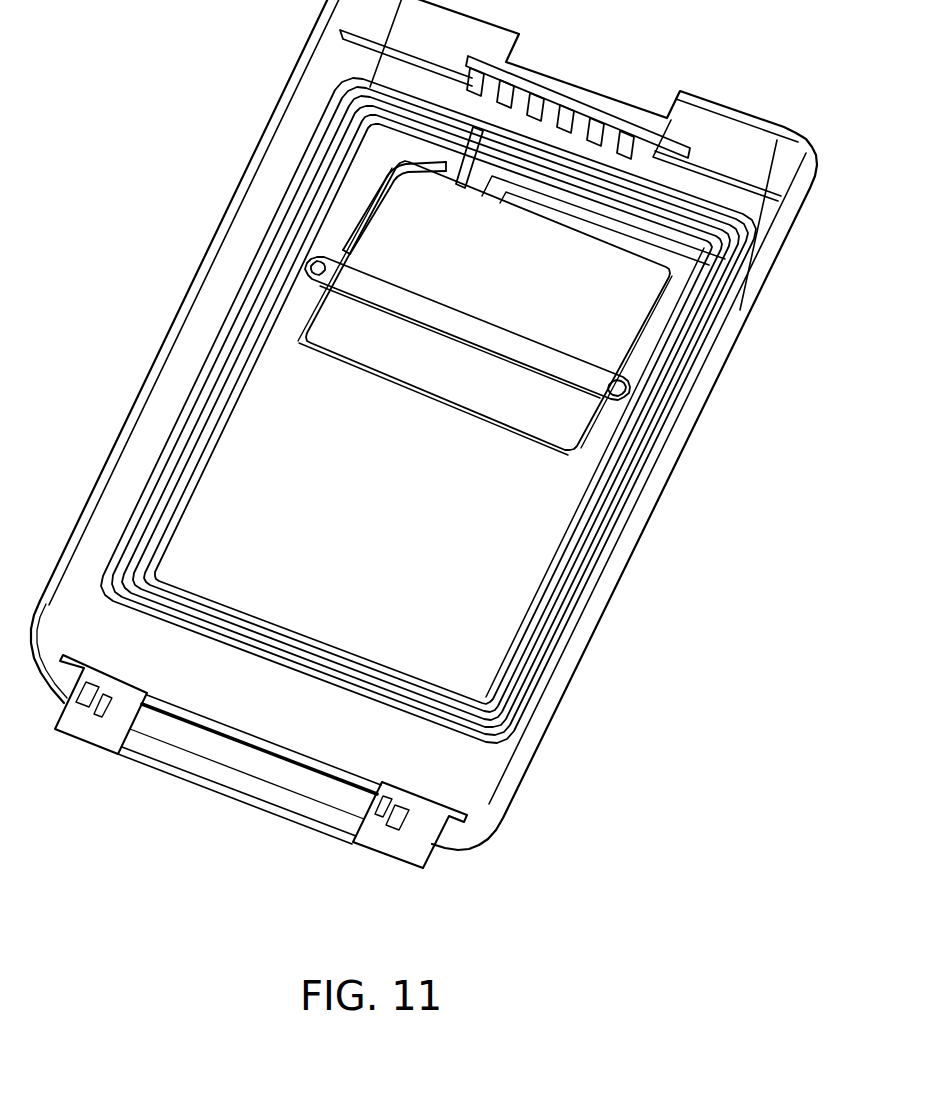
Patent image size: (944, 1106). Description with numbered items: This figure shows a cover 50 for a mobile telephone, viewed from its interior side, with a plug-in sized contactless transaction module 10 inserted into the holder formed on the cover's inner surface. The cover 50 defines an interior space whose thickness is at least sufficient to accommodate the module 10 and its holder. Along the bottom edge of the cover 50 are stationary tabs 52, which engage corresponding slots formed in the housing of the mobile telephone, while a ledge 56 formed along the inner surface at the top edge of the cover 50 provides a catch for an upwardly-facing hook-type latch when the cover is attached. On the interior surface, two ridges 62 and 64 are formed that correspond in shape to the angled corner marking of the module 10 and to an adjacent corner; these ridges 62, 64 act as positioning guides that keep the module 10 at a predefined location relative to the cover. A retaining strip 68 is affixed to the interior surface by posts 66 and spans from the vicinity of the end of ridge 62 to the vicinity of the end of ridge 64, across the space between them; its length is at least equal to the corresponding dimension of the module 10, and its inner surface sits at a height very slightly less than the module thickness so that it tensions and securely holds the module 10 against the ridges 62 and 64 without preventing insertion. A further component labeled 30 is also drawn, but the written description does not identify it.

The contactless transaction module 10 is at (363, 388).
The cover 30 is at (200, 407).
The cover 50 is at (819, 125).
The stationary tabs 52 is at (403, 850).
The ledge 56 is at (532, 92).
The ridge 62 is at (392, 172).
The ridge 64 is at (669, 303).
The posts 66 is at (310, 266).
The retaining strip 68 is at (521, 357).